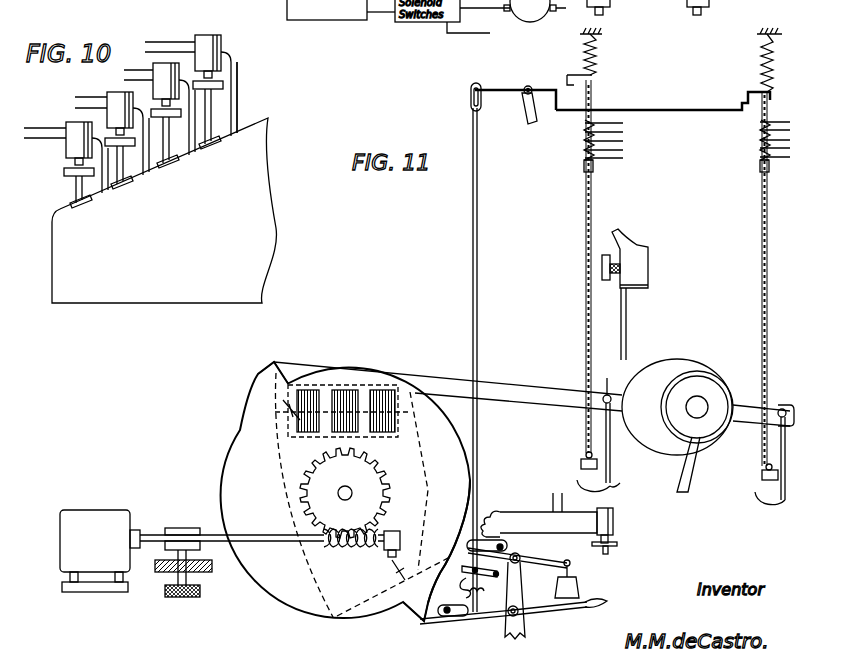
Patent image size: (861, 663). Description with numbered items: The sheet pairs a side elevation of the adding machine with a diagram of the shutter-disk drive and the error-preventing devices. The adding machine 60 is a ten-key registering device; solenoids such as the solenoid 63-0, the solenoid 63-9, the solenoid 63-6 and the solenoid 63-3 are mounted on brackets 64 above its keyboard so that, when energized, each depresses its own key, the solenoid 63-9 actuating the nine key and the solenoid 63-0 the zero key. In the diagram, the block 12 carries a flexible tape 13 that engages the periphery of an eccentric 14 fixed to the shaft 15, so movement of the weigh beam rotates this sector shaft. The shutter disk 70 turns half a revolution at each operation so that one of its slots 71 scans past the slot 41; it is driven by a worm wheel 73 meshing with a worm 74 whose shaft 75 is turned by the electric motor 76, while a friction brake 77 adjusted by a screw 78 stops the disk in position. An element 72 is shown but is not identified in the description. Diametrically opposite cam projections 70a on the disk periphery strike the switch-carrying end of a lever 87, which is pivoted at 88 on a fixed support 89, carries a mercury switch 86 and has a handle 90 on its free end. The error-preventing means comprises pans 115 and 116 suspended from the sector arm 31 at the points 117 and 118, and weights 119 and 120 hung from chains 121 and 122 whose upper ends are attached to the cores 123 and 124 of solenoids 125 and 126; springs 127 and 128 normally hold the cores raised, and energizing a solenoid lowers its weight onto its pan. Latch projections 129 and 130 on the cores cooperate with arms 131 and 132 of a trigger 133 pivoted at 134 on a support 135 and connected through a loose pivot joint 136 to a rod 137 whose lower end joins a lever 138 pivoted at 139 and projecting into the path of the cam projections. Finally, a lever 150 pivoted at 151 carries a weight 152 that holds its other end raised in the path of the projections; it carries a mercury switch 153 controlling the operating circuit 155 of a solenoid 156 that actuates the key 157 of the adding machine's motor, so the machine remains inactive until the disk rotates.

In FIG. 10, the adding machine 60 is at (262, 160).
In FIG. 10, the solenoid 63-0 is at (75, 136).
In FIG. 10, the solenoid 63-9 is at (118, 102).
In FIG. 10, the solenoid 63-6 is at (165, 68).
In FIG. 10, the solenoid 63-3 is at (208, 50).
In FIG. 10, the brackets 64 is at (238, 102).
In FIG. 11, the electric motor 76 is at (531, 13).
In FIG. 11, the block 12 is at (643, 258).
In FIG. 11, the flexible tape 13 is at (625, 316).
In FIG. 11, the eccentric 14 is at (660, 360).
In FIG. 11, the shaft 15 is at (697, 415).
In FIG. 11, the sector arm 31 is at (515, 388).
In FIG. 11, the slot 41 is at (447, 392).
In FIG. 11, the shutter disk 70 is at (229, 452).
In FIG. 11, the cam projections 70a is at (256, 372).
In FIG. 11, the slots 71 is at (285, 412).
In FIG. 11, the gear 72 is at (355, 482).
In FIG. 11, the worm wheel 73 is at (312, 471).
In FIG. 11, the worm 74 is at (345, 548).
In FIG. 11, the shaft 75 is at (268, 542).
In FIG. 11, the friction brake 77 is at (188, 526).
In FIG. 11, the screw 78 is at (180, 598).
In FIG. 11, the mercury switch 86 is at (487, 612).
In FIG. 11, the lever 87 is at (563, 608).
In FIG. 11, the pivot 88 is at (497, 611).
In FIG. 11, the support 89 is at (540, 627).
In FIG. 11, the handle 90 is at (608, 604).
In FIG. 11, the pan 115 is at (612, 485).
In FIG. 11, the pan 116 is at (757, 495).
In FIG. 11, the pivot point 117 is at (606, 383).
In FIG. 11, the pivot point 118 is at (778, 405).
In FIG. 11, the weight 119 is at (581, 459).
In FIG. 11, the weight 120 is at (767, 467).
In FIG. 11, the chain 121 is at (585, 315).
In FIG. 11, the chain 122 is at (765, 295).
In FIG. 11, the core 123 is at (585, 164).
In FIG. 11, the core 124 is at (760, 160).
In FIG. 11, the solenoid 125 is at (709, 3).
In FIG. 11, the solenoid 126 is at (758, 137).
In FIG. 11, the spring 127 is at (600, 56).
In FIG. 11, the spring 128 is at (752, 48).
In FIG. 11, the latch projection 129 is at (567, 54).
In FIG. 11, the latch projection 130 is at (748, 91).
In FIG. 11, the arm 131 is at (556, 90).
In FIG. 11, the arm 132 is at (688, 109).
In FIG. 11, the trigger 133 is at (500, 94).
In FIG. 11, the pivot 134 is at (526, 89).
In FIG. 11, the support 135 is at (525, 125).
In FIG. 11, the loose pivot joint 136 is at (471, 91).
In FIG. 11, the rod 137 is at (472, 236).
In FIG. 11, the lever 138 is at (465, 572).
In FIG. 11, the pivot 139 is at (500, 571).
In FIG. 11, the lever 150 is at (570, 557).
In FIG. 11, the pivot 151 is at (519, 556).
In FIG. 11, the weight 152 is at (578, 590).
In FIG. 11, the mercury switch 153 is at (458, 524).
In FIG. 11, the operating circuit 155 is at (520, 511).
In FIG. 11, the solenoid 156 is at (615, 517).
In FIG. 11, the key 157 is at (620, 543).